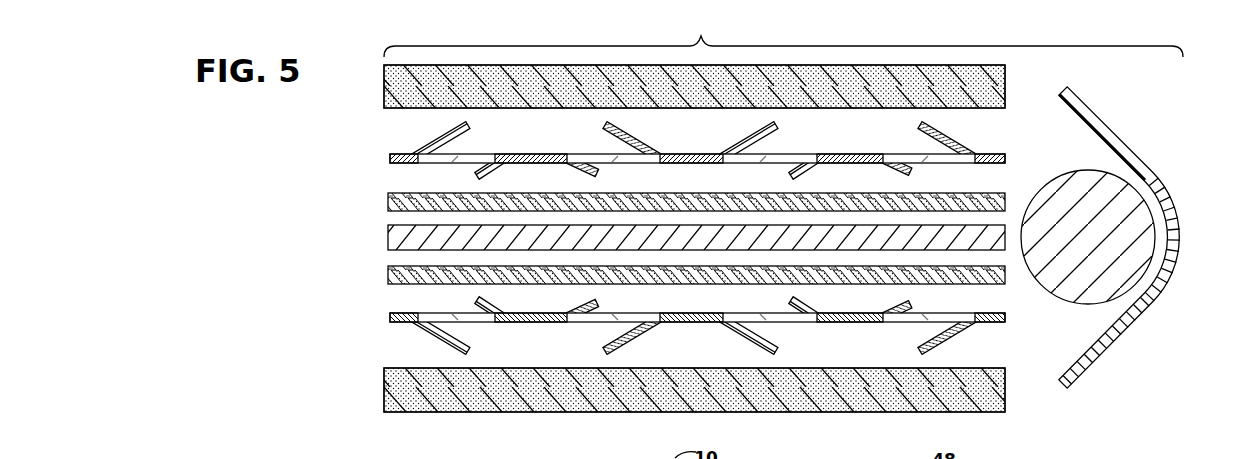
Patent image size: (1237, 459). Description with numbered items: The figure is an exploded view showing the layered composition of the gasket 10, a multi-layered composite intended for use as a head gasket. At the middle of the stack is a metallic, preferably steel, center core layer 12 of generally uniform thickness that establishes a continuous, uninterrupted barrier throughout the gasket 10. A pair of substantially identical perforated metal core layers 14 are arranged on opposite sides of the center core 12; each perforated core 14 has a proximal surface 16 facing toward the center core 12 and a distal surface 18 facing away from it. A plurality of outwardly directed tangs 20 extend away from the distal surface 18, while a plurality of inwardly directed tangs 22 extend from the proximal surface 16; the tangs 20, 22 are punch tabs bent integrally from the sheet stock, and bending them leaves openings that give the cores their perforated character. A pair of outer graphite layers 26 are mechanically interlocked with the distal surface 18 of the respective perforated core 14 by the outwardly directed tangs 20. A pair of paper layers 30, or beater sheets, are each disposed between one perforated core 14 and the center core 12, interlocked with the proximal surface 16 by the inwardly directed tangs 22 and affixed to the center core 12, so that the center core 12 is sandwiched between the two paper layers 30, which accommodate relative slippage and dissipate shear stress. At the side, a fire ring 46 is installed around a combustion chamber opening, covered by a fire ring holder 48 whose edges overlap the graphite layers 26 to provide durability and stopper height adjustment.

The gasket 10 is at (373, 412).
The center core layer 12 is at (387, 243).
The perforated metal core layer 14 is at (387, 157).
The proximal surface 16 is at (462, 165).
The distal surface 18 is at (542, 153).
The outwardly directed tang 20 is at (605, 127).
The inwardly directed tang 22 is at (598, 174).
The outer graphite layer 26 is at (1010, 82).
The paper layer 30 is at (386, 202).
The fire ring 46 is at (1130, 196).
The fire ring holder 48 is at (1112, 340).